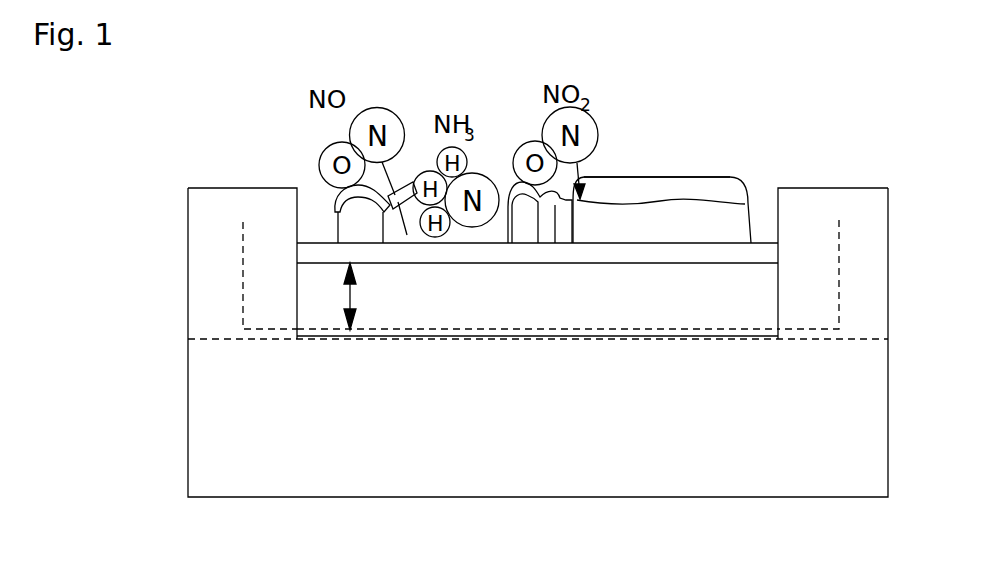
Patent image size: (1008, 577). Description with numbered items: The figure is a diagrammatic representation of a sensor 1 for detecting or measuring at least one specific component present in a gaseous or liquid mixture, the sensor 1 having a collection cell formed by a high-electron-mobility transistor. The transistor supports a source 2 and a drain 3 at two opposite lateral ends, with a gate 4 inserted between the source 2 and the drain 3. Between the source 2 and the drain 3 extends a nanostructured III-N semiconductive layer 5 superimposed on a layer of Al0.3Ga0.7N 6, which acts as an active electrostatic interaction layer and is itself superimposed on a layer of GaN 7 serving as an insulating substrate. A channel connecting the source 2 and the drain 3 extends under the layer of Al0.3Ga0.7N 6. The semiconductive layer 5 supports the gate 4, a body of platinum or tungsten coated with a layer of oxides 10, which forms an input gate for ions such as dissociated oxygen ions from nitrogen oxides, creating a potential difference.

The sensor 1 is at (188, 425).
The source 2 is at (222, 187).
The drain 3 is at (848, 188).
The gate 4 is at (668, 225).
The nanostructured III-N semiconductive layer 5 is at (755, 253).
The layer of Al0.3Ga0.7N 6 is at (317, 290).
The layer of GaN 7 is at (392, 462).
The layer of oxides 10 is at (647, 190).